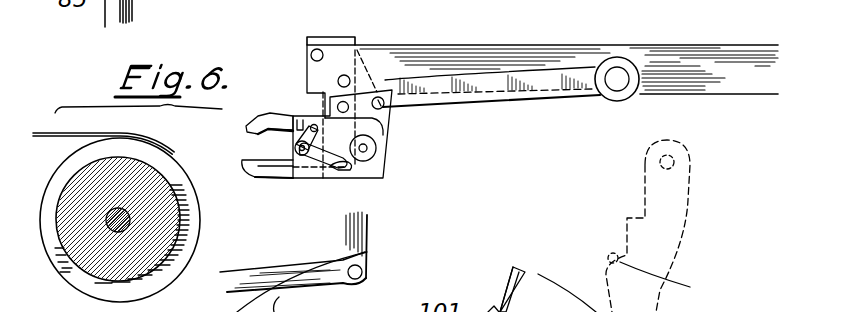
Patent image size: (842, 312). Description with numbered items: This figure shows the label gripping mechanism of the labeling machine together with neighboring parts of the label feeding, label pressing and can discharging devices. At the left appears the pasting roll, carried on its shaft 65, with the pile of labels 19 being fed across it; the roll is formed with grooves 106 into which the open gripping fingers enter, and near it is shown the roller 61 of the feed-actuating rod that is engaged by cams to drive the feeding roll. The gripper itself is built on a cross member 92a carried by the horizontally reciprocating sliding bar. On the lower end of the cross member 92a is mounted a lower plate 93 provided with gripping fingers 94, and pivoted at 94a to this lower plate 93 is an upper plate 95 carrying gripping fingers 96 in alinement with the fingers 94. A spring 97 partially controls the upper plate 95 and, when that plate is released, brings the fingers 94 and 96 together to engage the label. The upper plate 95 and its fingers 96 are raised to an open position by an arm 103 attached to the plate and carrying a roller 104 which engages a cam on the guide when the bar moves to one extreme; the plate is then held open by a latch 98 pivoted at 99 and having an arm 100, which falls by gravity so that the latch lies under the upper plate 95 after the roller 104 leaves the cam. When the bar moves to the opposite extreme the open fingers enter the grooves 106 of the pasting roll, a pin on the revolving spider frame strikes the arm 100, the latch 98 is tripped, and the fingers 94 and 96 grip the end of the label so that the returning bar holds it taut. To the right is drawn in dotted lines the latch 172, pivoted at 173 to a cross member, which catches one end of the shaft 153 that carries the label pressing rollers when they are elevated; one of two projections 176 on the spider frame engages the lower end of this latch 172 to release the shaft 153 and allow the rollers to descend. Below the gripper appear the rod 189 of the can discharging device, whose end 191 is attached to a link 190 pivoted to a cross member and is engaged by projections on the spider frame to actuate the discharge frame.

The labels 19 is at (130, 133).
The roller 61 is at (138, 166).
The shaft 65 is at (121, 232).
The grooves 106 is at (185, 240).
The cross member 92a is at (336, 45).
The lower plate 93 is at (377, 183).
The gripping fingers 94 is at (262, 167).
The pivot 94a is at (367, 148).
The upper plate 95 is at (297, 116).
The gripping fingers 96 is at (258, 126).
The spring 97 is at (372, 80).
The latch 98 is at (305, 130).
The pivot 99 is at (302, 155).
The arm 100 is at (340, 170).
The arm 103 is at (530, 88).
The roller 104 is at (617, 101).
The shaft 153 is at (672, 276).
The latch 172 is at (665, 237).
The pivot 173 is at (670, 162).
The projections 176 is at (516, 280).
The rod 189 is at (302, 282).
The link 190 is at (360, 238).
The end of rod 191 is at (367, 278).